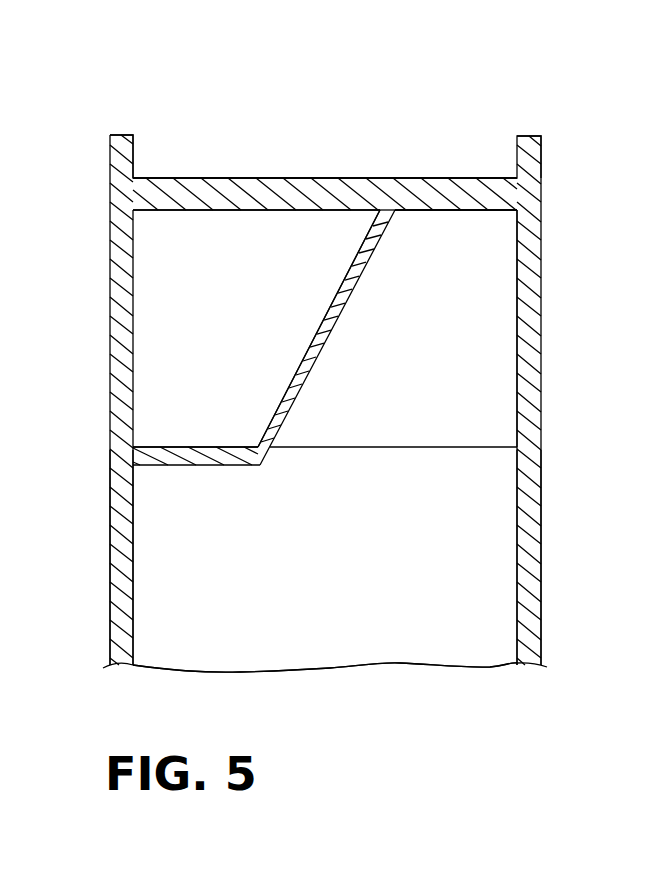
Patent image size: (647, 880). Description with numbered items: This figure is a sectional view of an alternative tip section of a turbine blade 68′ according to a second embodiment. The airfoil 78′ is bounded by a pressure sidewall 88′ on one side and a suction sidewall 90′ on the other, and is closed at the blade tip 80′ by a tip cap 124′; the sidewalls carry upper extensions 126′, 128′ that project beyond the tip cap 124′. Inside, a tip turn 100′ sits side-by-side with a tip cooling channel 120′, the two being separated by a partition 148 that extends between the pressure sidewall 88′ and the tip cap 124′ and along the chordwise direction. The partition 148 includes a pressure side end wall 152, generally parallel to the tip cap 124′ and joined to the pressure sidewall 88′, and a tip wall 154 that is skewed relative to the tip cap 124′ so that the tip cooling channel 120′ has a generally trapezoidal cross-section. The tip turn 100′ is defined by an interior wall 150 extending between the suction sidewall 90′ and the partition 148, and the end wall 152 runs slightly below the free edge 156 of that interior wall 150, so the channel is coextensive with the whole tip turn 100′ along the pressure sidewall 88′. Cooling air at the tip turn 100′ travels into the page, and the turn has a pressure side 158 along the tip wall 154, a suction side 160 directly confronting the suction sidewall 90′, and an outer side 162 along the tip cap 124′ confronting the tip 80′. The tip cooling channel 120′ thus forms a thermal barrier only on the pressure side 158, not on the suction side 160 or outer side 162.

The turbine blade 68′ is at (205, 52).
The airfoil 78′ is at (97, 303).
The blade tip 80′ is at (397, 166).
The pressure sidewall 88′ is at (110, 575).
The suction sidewall 90′ is at (545, 552).
The tip turn 100′ is at (438, 322).
The tip cooling channel 120′ is at (228, 341).
The tip cap 124′ is at (332, 178).
The first wall extension 126′ is at (123, 133).
The second wall extension 128′ is at (528, 135).
The partition 148 is at (190, 436).
The interior wall 150 is at (393, 600).
The pressure side end wall 152 is at (197, 470).
The tip wall 154 is at (313, 322).
The free edge 156 is at (463, 440).
The pressure side 158 is at (376, 250).
The suction side 160 is at (516, 336).
The outer side 162 is at (467, 210).